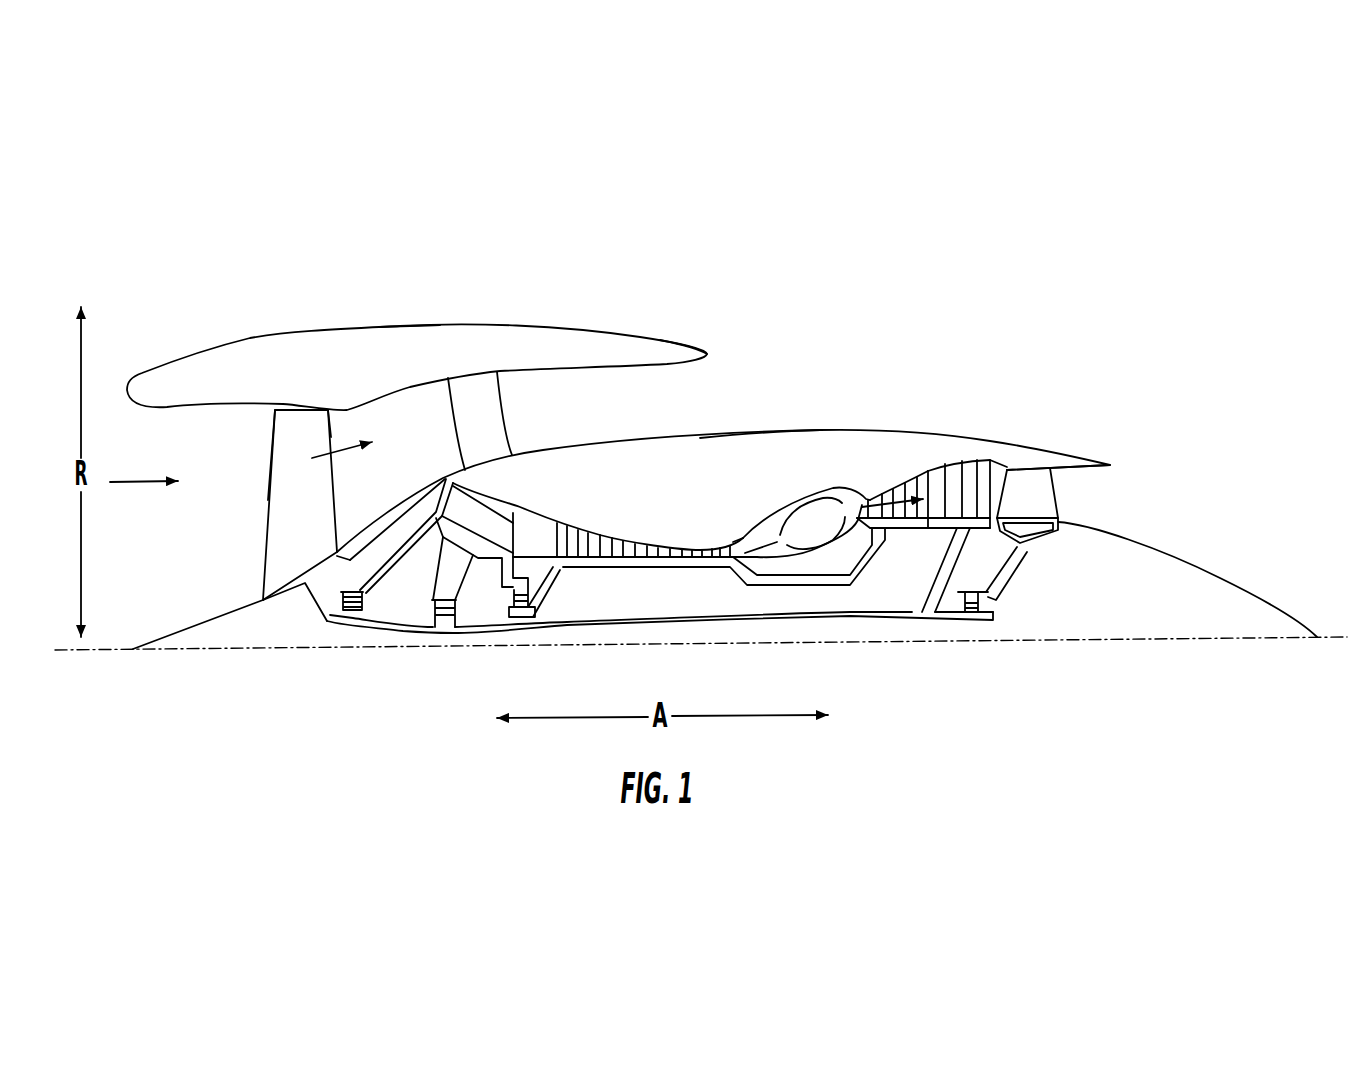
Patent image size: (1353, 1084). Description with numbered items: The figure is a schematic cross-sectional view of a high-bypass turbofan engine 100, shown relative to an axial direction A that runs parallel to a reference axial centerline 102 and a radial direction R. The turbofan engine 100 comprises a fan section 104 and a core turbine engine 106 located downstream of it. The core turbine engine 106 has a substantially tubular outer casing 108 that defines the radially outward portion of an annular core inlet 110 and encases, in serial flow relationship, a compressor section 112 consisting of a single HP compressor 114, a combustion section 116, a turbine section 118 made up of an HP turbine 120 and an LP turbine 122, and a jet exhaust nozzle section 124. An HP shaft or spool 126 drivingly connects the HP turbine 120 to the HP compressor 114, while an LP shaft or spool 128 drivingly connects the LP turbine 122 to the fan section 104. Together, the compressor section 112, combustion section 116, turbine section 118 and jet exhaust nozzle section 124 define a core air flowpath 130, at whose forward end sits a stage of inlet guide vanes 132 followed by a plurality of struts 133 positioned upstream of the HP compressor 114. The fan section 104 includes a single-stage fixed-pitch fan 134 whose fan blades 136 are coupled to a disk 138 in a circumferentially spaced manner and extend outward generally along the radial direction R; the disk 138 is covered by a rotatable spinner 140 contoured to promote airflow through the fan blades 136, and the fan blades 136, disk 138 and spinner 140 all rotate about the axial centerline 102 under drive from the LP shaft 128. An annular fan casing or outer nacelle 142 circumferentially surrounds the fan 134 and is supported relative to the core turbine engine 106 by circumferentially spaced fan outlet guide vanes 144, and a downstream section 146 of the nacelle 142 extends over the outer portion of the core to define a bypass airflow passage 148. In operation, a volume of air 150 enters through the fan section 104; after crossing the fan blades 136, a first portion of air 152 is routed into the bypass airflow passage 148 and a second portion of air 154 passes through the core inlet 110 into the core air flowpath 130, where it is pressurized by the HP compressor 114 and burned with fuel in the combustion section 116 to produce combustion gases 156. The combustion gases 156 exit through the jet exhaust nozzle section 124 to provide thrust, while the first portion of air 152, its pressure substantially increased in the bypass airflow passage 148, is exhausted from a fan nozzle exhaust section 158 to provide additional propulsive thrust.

The turbofan engine 100 is at (782, 278).
The axial centerline 102 is at (1237, 638).
The fan section 104 is at (253, 372).
The core turbine engine 106 is at (769, 418).
The outer casing 108 is at (810, 430).
The core inlet 110 is at (617, 456).
The compressor section 112 is at (607, 527).
The HP compressor 114 is at (657, 530).
The combustion section 116 is at (793, 496).
The turbine section 118 is at (930, 467).
The HP turbine 120 is at (880, 473).
The LP turbine 122 is at (973, 453).
The jet exhaust nozzle section 124 is at (1040, 483).
The HP shaft or spool 126 is at (800, 586).
The LP shaft or spool 128 is at (890, 621).
The core air flowpath 130 is at (533, 530).
The inlet guide vanes 132 is at (428, 478).
The struts 133 is at (490, 518).
The fixed-pitch fan 134 is at (262, 457).
The fan blades 136 is at (268, 500).
The disk 138 is at (282, 592).
The spinner 140 is at (178, 631).
The outer nacelle 142 is at (420, 338).
The fan outlet guide vanes 144 is at (487, 388).
The downstream section 146 is at (680, 337).
The bypass airflow passage 148 is at (626, 423).
The volume of air 150 is at (138, 482).
The first portion of air 152 is at (340, 438).
The second portion of air 154 is at (438, 497).
The combustion gases 156 is at (885, 491).
The fan nozzle exhaust section 158 is at (701, 383).